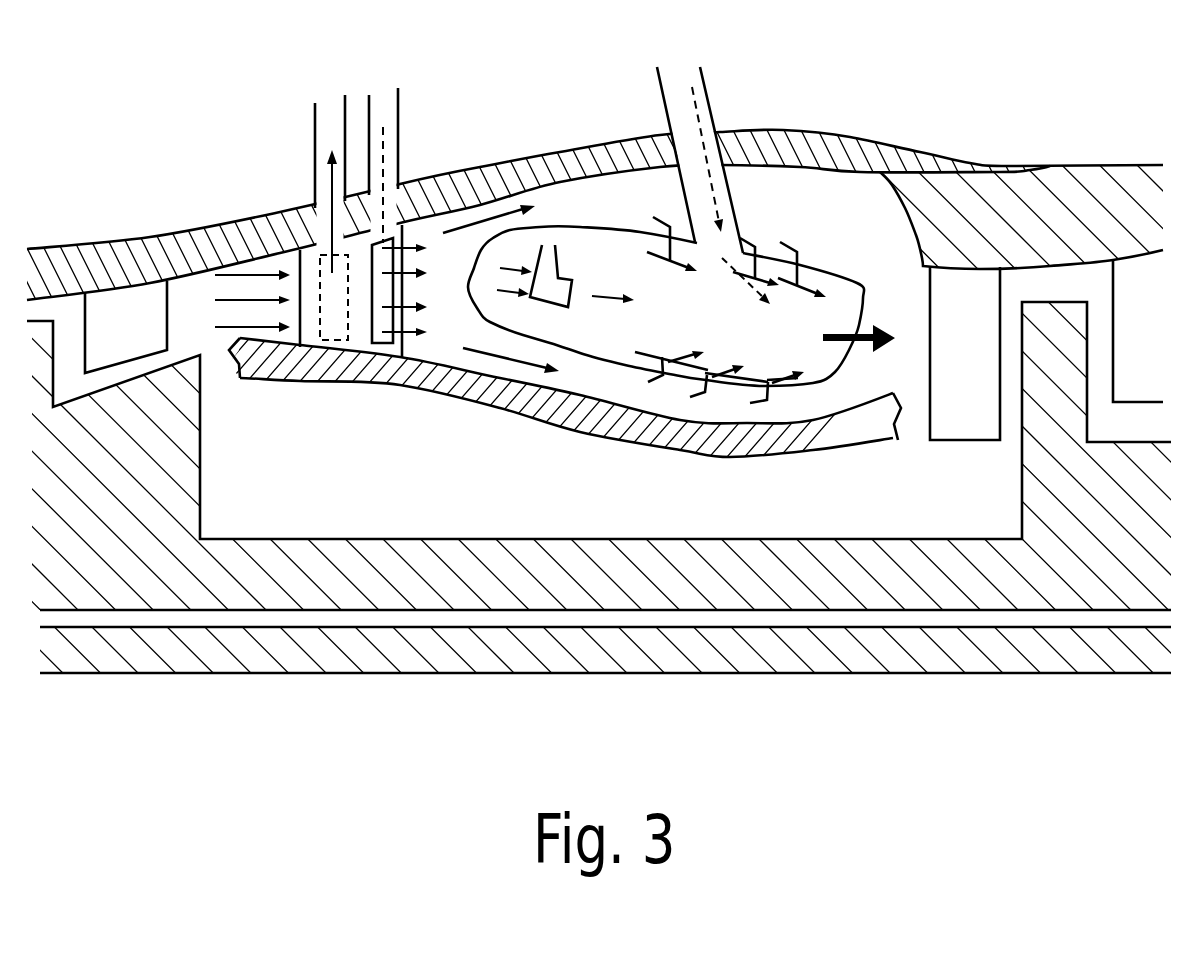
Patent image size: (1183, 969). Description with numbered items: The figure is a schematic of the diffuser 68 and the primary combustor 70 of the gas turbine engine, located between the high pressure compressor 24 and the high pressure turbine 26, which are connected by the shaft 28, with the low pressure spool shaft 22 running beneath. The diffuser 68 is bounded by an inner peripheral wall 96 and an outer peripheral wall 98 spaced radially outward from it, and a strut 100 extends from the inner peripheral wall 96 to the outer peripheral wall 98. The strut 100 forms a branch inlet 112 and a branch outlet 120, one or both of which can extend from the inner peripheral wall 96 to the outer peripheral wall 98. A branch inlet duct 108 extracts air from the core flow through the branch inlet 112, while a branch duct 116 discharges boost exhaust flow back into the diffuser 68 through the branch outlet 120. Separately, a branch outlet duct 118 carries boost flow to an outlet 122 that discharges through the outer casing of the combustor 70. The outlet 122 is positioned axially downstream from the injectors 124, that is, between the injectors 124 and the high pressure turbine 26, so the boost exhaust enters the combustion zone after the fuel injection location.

The shaft 22 is at (410, 675).
The high pressure compressor 24 is at (74, 193).
The high pressure turbine 26 is at (1058, 128).
The shaft 28 is at (598, 538).
The diffuser 68 is at (313, 421).
The combustor 70 is at (585, 228).
The inner peripheral wall 96 is at (262, 380).
The outer peripheral wall 98 is at (290, 208).
The strut 100 is at (300, 252).
The branch inlet duct 108 is at (315, 112).
The branch inlet 112 is at (333, 340).
The branch duct 116 is at (398, 118).
The branch outlet duct 118 is at (708, 87).
The branch outlet 120 is at (386, 347).
The outlet 122 is at (720, 252).
The injectors 124 is at (548, 302).